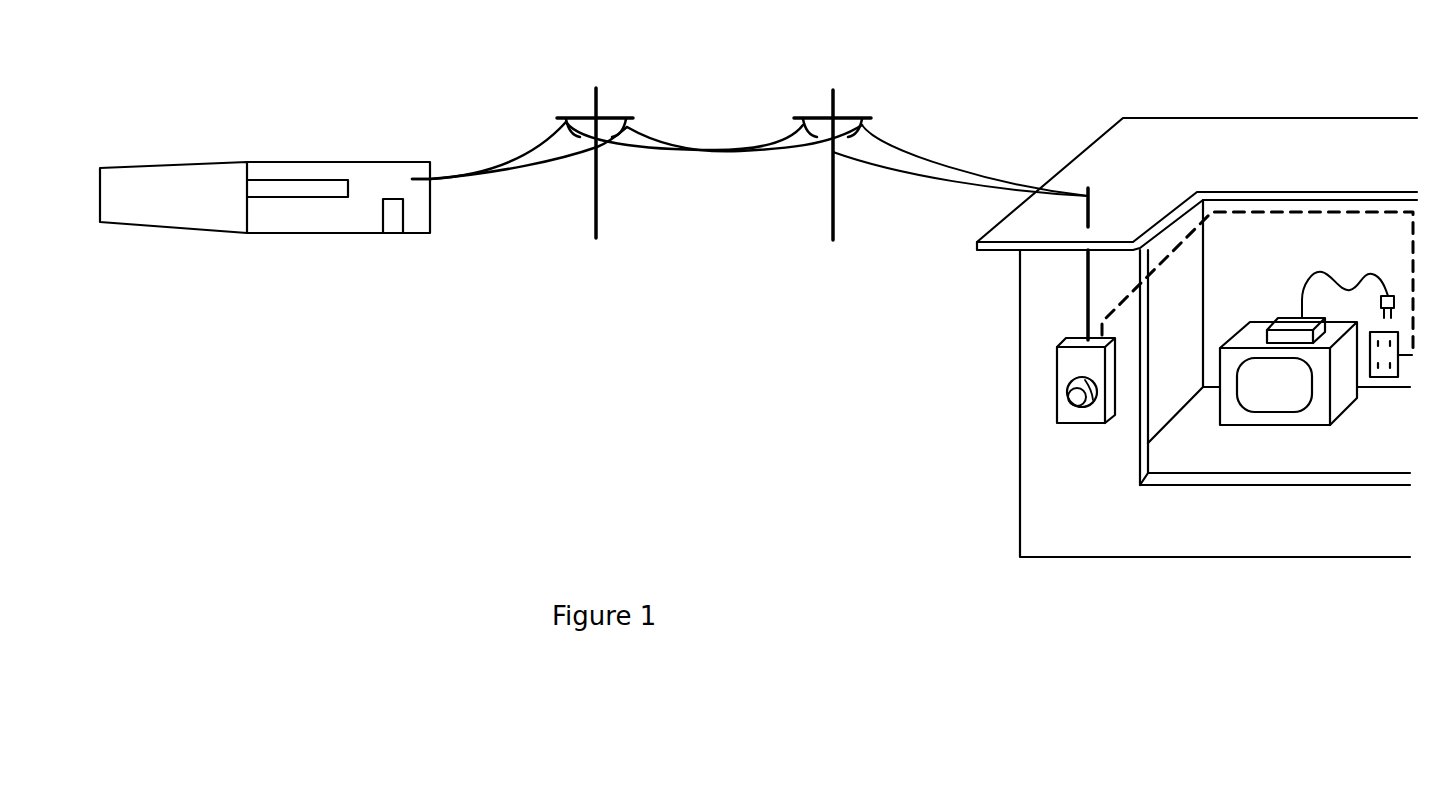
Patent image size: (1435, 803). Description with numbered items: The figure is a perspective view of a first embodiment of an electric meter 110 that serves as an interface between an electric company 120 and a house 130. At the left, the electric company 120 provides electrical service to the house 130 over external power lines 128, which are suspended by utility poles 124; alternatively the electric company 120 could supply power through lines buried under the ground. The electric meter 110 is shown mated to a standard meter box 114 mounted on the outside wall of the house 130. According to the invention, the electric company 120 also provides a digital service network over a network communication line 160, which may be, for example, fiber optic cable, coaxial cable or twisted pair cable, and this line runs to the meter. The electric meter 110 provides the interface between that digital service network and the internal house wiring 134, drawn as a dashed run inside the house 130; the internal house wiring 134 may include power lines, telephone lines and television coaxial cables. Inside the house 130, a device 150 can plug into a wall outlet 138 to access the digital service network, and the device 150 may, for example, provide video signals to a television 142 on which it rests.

The electric meter 110 is at (1073, 396).
The meter box 114 is at (1067, 420).
The electric company 120 is at (350, 159).
The utility poles 124 is at (596, 95).
The external power lines 128 is at (637, 128).
The house 130 is at (1190, 118).
The internal house wiring 134 is at (1174, 252).
The wall outlet 138 is at (1382, 378).
The television 142 is at (1265, 422).
The device 150 is at (1290, 322).
The network communication line 160 is at (887, 173).